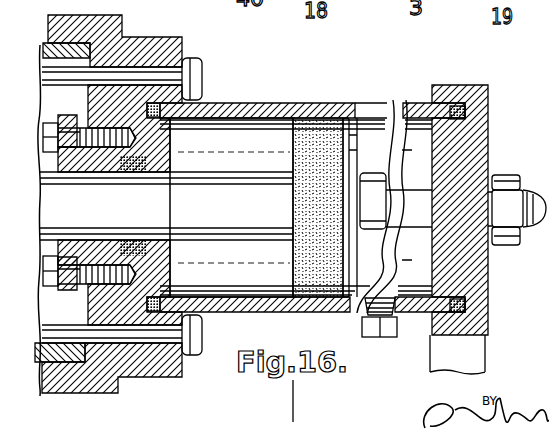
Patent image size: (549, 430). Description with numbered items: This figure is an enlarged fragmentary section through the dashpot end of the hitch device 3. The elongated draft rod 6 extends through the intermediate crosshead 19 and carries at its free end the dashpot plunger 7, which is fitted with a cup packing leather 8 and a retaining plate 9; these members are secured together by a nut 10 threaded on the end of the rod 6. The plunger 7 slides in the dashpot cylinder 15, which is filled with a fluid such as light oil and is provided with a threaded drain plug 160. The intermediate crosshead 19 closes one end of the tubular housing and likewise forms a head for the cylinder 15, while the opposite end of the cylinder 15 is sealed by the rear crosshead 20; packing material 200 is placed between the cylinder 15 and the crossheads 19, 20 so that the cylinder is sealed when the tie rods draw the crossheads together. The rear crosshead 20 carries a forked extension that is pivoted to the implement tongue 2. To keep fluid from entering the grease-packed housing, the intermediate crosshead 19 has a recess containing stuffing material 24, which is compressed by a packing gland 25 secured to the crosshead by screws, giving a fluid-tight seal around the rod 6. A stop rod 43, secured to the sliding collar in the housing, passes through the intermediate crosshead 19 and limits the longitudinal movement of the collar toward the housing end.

The implement tongue 2 is at (545, 252).
The device 3 is at (43, 362).
The draft rod 6 is at (213, 190).
The dashpot plunger 7 is at (290, 277).
The cup packing leather 8 is at (321, 285).
The retaining plate 9 is at (353, 133).
The nut 10 is at (375, 180).
The dashpot cylinder 15 is at (260, 112).
The intermediate crosshead 19 is at (85, 382).
The rear crosshead 20 is at (481, 280).
The stuffing material 24 is at (147, 245).
The packing gland 25 is at (73, 283).
The stop rod 43 is at (145, 77).
The drain plug 160 is at (382, 340).
The packing material 200 is at (212, 69).